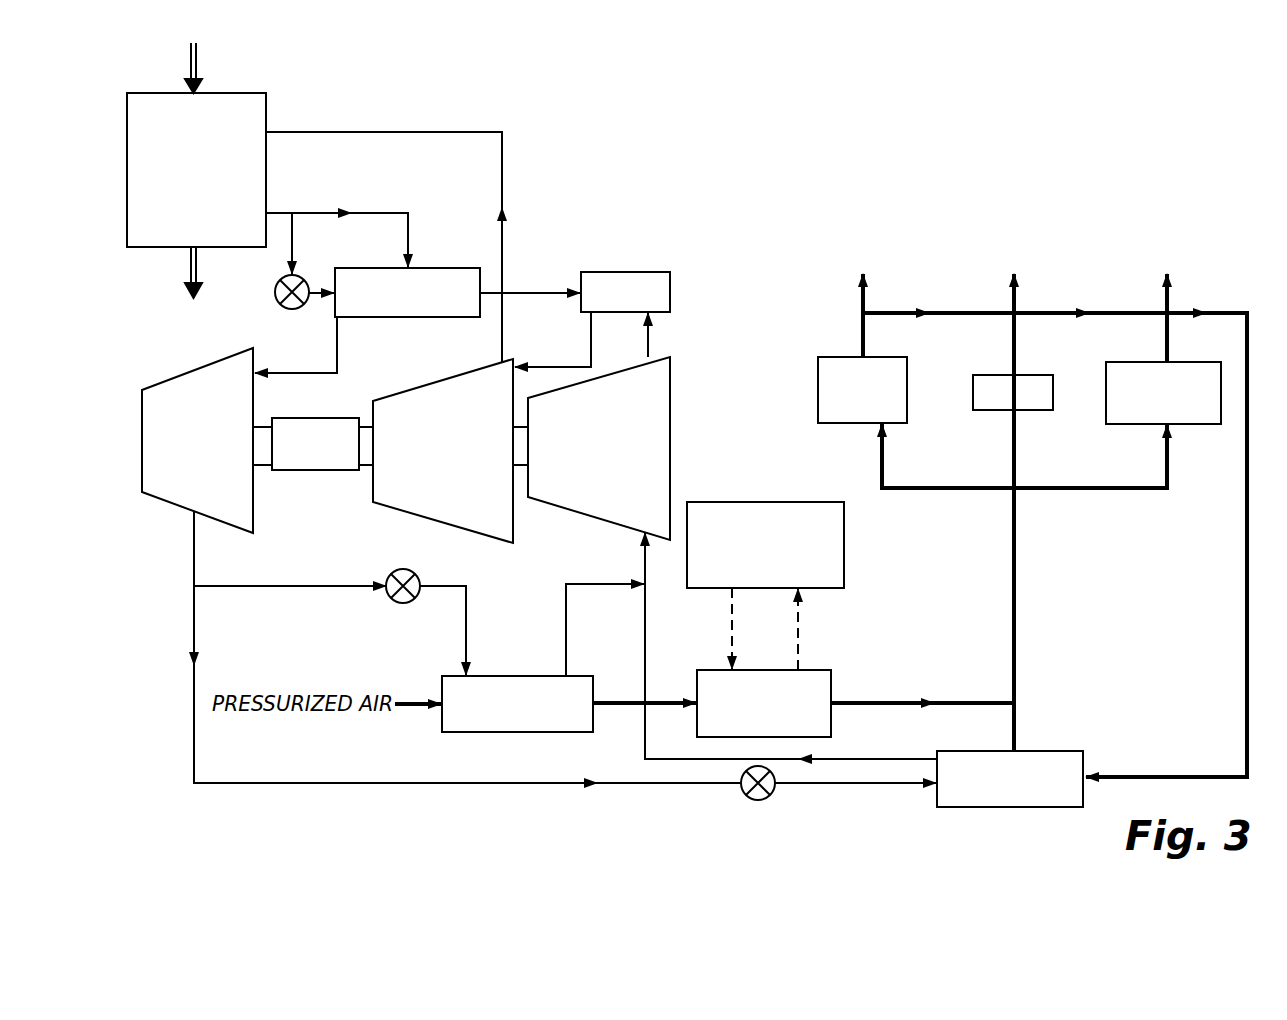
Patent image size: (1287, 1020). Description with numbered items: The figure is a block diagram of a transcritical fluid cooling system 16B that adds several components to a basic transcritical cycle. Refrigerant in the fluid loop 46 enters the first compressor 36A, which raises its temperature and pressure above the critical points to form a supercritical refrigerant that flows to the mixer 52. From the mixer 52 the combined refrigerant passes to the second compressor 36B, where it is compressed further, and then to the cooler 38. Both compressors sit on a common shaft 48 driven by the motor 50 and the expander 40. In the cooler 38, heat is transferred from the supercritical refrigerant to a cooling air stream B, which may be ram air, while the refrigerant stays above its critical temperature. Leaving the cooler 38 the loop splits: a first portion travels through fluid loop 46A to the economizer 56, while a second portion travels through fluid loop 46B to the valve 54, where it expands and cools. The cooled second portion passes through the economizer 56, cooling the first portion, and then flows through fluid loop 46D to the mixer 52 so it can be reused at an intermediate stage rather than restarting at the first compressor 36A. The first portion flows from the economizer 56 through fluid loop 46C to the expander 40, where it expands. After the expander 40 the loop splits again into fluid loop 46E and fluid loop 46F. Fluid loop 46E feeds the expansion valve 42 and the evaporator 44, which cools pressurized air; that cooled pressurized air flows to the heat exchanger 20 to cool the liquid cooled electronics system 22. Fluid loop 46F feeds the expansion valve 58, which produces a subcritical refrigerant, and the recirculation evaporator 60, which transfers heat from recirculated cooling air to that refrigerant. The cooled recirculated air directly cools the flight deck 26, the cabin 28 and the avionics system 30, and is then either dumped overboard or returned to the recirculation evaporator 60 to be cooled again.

The cooling air stream B is at (196, 68).
The transcritical fluid cooling system 16B is at (629, 194).
The heat exchanger 20 is at (832, 680).
The liquid cooled electronics system 22 is at (785, 502).
The flight deck 26 is at (863, 423).
The cabin 28 is at (1040, 410).
The avionics system 30 is at (1200, 424).
The first compressor 36A is at (671, 383).
The second compressor 36B is at (513, 525).
The cooler 38 is at (267, 117).
The expander 40 is at (253, 503).
The expansion valve 42 is at (415, 573).
The evaporator 44 is at (490, 732).
The fluid loop 46 is at (564, 620).
The fluid loop 46A is at (373, 217).
The fluid loop 46B is at (293, 230).
The fluid loop 46C is at (338, 345).
The fluid loop 46D is at (527, 293).
The fluid loop 46E is at (365, 582).
The fluid loop 46F is at (194, 626).
The shaft 48 is at (366, 423).
The motor 50 is at (303, 418).
The mixer 52 is at (647, 272).
The valve 54 is at (275, 292).
The economizer 56 is at (425, 268).
The expansion valve 58 is at (760, 800).
The recirculation evaporator 60 is at (1040, 751).